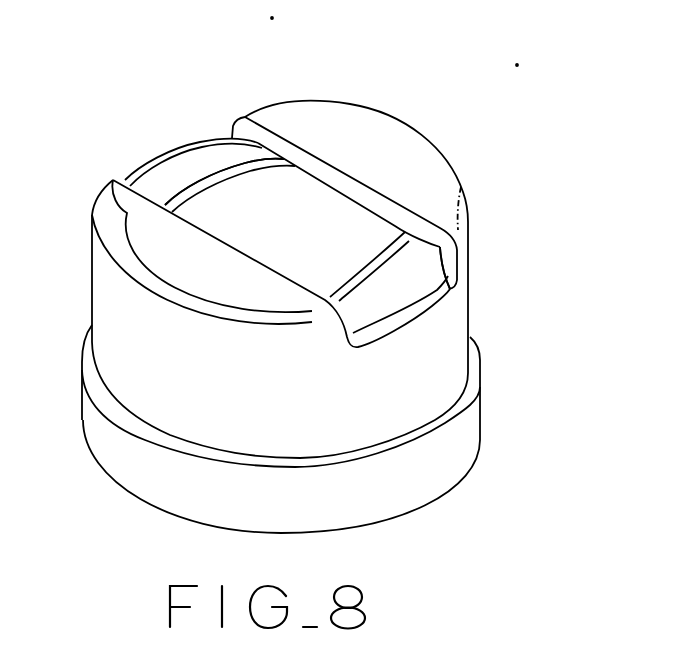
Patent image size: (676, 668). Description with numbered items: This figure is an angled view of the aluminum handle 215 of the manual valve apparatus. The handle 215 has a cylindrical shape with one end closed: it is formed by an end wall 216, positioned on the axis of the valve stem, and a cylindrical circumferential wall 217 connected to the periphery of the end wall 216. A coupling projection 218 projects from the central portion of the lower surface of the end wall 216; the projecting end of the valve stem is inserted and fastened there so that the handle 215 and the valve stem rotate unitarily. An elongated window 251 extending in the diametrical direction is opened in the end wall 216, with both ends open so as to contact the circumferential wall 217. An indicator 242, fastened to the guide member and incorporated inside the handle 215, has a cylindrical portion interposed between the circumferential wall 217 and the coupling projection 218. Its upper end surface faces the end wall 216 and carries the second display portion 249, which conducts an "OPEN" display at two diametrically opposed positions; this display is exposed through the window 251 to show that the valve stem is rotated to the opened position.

The handle 215 is at (328, 275).
The end wall 216 is at (365, 127).
The circumferential wall 217 is at (442, 377).
The coupling projection 218 is at (308, 258).
The indicator 242 is at (153, 173).
The second display portion 249 is at (425, 261).
The window 251 is at (204, 233).